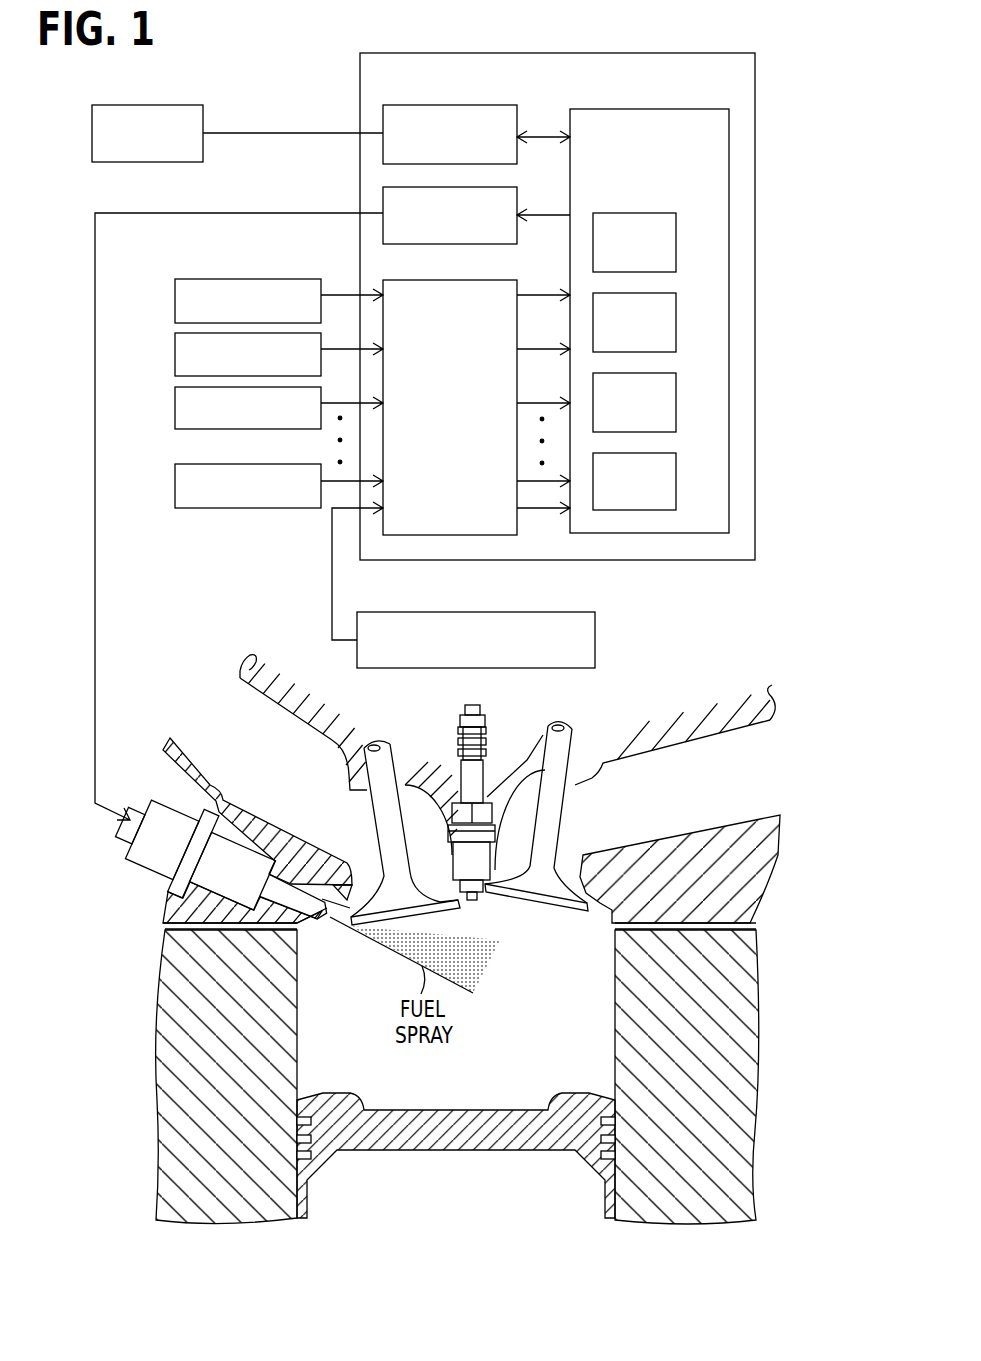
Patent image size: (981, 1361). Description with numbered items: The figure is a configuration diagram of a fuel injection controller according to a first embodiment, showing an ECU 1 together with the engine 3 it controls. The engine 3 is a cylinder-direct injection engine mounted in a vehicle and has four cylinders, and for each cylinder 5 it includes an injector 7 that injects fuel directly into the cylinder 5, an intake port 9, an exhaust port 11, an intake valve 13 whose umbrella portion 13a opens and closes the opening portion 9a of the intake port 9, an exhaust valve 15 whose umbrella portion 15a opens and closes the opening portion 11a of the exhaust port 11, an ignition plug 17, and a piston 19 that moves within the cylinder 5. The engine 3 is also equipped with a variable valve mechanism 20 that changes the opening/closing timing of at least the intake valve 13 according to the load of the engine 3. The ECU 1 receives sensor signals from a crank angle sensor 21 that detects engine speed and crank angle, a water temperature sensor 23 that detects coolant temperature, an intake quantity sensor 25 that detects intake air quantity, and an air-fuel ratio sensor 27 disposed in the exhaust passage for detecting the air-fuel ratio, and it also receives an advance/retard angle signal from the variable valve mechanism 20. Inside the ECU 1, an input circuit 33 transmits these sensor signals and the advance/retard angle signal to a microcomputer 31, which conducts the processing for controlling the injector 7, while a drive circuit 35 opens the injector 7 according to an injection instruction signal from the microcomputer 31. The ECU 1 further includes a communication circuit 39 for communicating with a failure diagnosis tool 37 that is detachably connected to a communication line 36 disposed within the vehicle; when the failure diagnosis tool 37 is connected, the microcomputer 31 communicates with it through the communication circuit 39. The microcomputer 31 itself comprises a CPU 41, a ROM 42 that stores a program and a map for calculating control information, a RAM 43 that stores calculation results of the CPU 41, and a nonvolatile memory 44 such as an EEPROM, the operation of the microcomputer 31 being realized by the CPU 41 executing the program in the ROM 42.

The ECU 1 is at (447, 57).
The engine 3 is at (194, 633).
The cylinder 5 is at (567, 1013).
The injector 7 is at (143, 865).
The intake port 9 is at (275, 690).
The opening portion 9a is at (369, 869).
The exhaust port 11 is at (697, 740).
The opening portion 11a is at (575, 853).
The intake valve 13 is at (388, 747).
The umbrella portion 13a is at (461, 913).
The exhaust valve 15 is at (565, 752).
The umbrella portion 15a is at (568, 905).
The ignition plug 17 is at (487, 800).
The piston 19 is at (340, 1093).
The variable valve mechanism 20 is at (570, 612).
The crank angle sensor 21 is at (175, 300).
The water temperature sensor 23 is at (175, 354).
The intake quantity sensor 25 is at (175, 408).
The air-fuel ratio sensor 27 is at (175, 486).
The microcomputer 31 is at (645, 110).
The input circuit 33 is at (497, 283).
The drive circuit 35 is at (488, 189).
The communication line 36 is at (268, 133).
The failure diagnosis tool 37 is at (150, 106).
The communication circuit 39 is at (488, 107).
The CPU 41 is at (665, 215).
The ROM 42 is at (665, 295).
The RAM 43 is at (665, 375).
The nonvolatile memory 44 is at (665, 454).